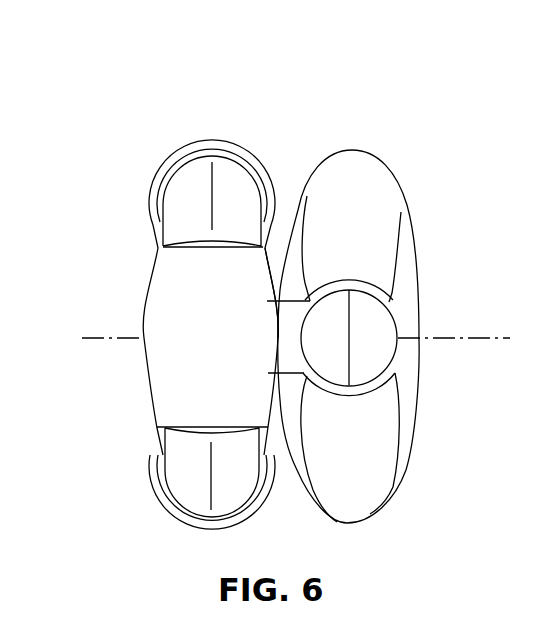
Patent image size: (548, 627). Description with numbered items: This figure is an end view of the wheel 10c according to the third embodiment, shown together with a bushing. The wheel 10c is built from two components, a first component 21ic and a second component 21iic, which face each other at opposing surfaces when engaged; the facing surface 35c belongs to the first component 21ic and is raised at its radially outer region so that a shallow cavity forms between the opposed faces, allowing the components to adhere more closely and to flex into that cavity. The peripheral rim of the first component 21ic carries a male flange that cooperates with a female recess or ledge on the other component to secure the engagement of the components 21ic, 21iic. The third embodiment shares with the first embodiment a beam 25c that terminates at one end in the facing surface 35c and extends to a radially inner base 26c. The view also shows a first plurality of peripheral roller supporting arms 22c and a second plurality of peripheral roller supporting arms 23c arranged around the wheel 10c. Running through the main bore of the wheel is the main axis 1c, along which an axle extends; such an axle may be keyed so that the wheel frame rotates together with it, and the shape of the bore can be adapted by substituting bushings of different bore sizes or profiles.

The main axis 1c is at (450, 338).
The wheel 10c is at (373, 148).
The first component 21ic is at (186, 178).
The second component 21iic is at (230, 182).
The first plurality of peripheral roller supporting arms 22c is at (186, 208).
The second plurality of peripheral roller supporting arms 23c is at (367, 327).
The beam 25c is at (283, 406).
The radially inner base 26c is at (270, 282).
The facing surface 35c is at (282, 432).